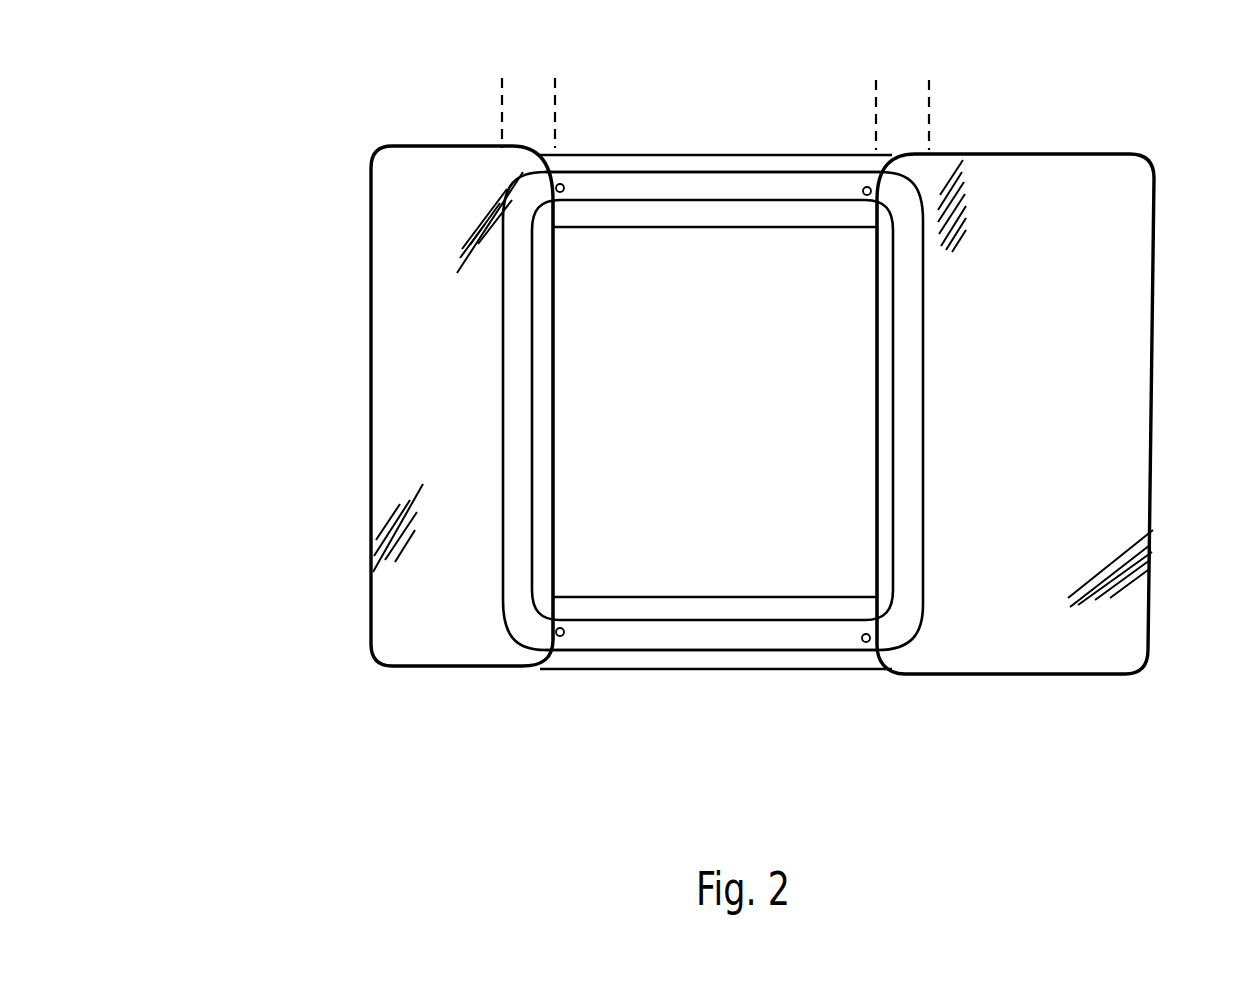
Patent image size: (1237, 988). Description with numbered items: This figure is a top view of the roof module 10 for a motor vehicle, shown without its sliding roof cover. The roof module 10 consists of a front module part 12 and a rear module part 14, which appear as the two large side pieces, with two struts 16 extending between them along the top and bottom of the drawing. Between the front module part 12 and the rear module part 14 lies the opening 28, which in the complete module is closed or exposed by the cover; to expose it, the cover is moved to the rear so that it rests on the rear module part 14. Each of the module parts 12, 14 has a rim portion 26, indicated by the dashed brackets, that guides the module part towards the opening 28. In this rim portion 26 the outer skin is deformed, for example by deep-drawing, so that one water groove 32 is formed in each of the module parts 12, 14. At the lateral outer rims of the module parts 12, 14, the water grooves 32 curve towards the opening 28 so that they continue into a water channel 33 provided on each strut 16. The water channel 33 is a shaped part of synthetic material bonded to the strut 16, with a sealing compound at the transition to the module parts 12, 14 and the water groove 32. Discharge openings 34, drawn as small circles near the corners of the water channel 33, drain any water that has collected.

The roof module 10 is at (333, 606).
The front module part 12 is at (470, 643).
The rear module part 14 is at (1023, 655).
The strut 16 is at (745, 163).
The rim portion 26 is at (555, 74).
The opening 28 is at (769, 403).
The water groove 32 is at (515, 420).
The water channel 33 is at (657, 188).
The discharge opening 34 is at (563, 184).